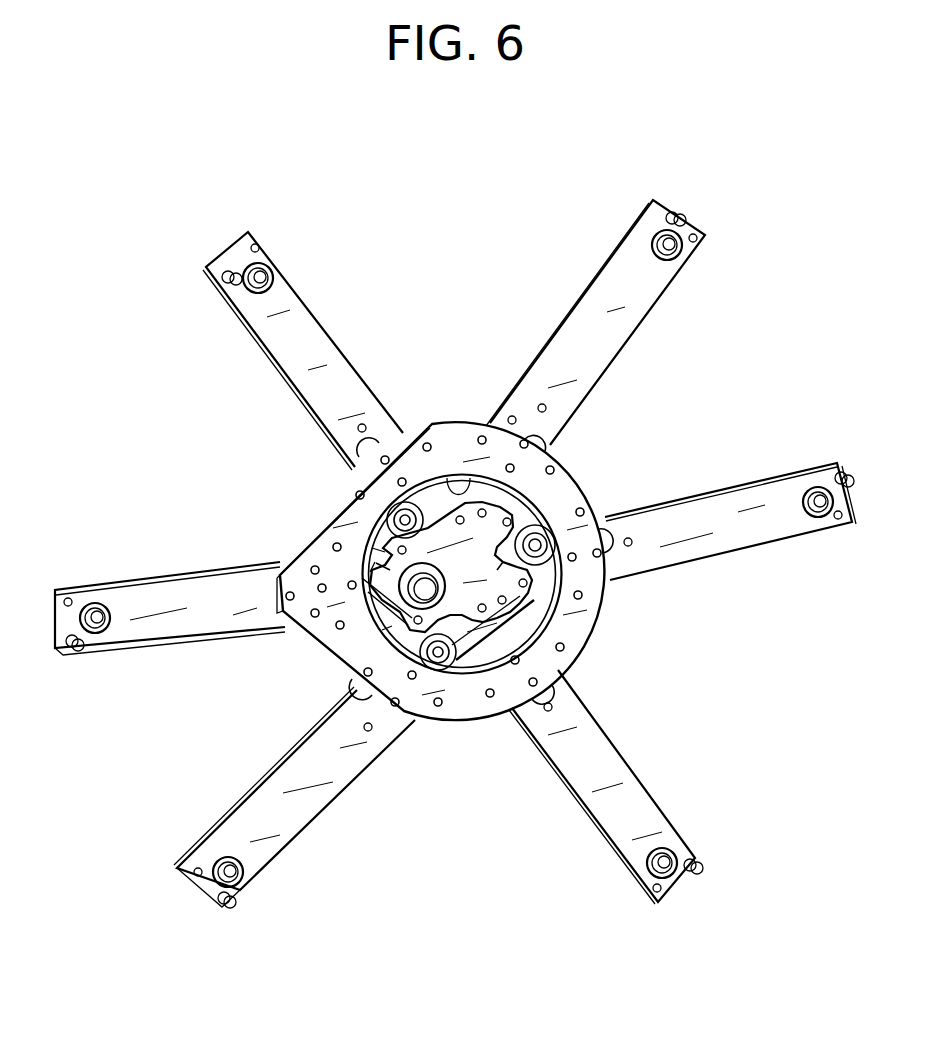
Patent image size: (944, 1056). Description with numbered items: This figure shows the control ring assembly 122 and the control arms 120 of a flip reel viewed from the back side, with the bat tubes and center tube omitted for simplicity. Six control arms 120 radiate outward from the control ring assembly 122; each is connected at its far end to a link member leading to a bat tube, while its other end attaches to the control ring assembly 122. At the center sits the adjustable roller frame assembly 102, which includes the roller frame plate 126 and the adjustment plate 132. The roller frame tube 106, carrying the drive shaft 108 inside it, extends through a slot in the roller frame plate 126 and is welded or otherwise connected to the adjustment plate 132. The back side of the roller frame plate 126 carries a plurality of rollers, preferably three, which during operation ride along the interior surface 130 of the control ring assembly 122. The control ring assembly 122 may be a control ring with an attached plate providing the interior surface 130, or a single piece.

The roller frame assembly 102 is at (550, 497).
The roller frame tube 106 is at (358, 640).
The drive shaft 108 is at (410, 650).
The control arm 120 is at (342, 348).
The control ring assembly 122 is at (582, 625).
The roller frame plate 126 is at (497, 627).
The interior surface 130 is at (458, 490).
The adjustment plate 132 is at (513, 588).